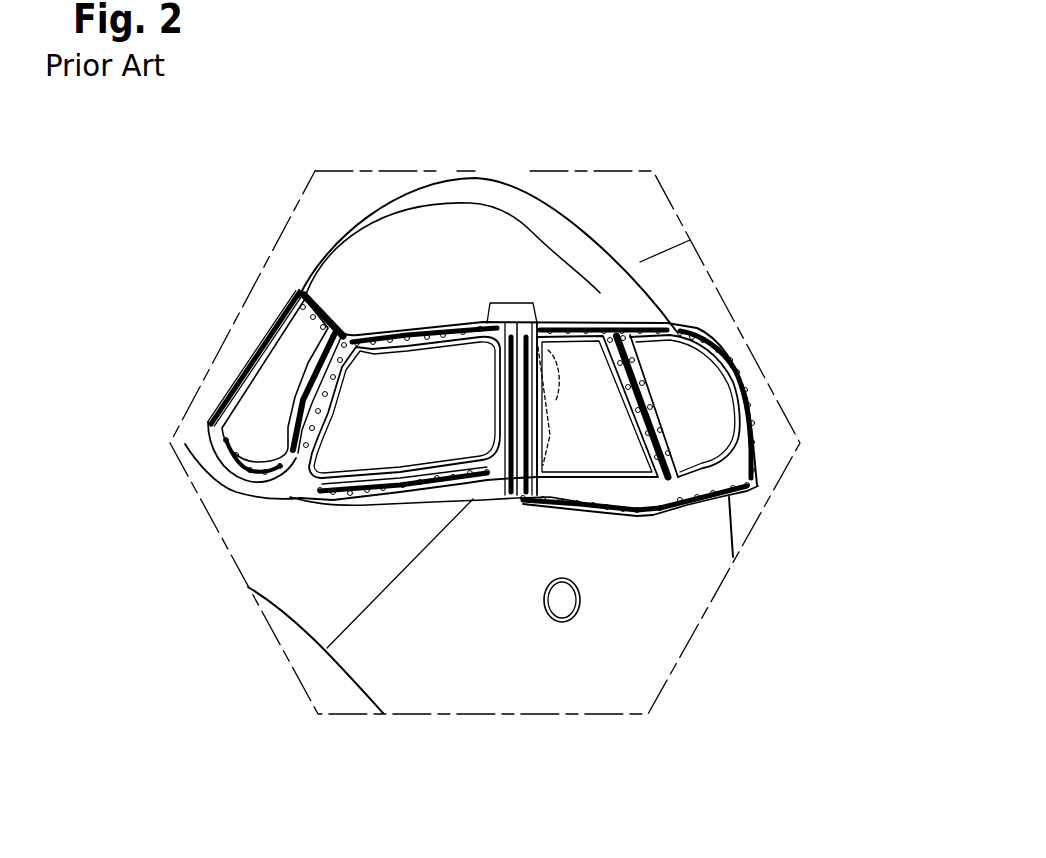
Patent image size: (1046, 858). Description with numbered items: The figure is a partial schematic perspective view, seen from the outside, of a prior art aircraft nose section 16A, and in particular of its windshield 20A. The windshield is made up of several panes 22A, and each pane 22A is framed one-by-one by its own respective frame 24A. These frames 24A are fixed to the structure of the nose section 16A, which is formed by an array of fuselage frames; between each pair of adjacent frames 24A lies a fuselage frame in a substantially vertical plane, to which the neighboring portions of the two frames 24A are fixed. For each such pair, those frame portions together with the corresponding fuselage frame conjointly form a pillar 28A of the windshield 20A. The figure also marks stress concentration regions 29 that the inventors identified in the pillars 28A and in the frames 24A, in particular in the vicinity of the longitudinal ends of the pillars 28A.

The nose section 16A is at (238, 558).
The windshield 20A is at (258, 346).
The panes 22A is at (665, 323).
The frames 24A is at (315, 490).
The pillar 28A is at (487, 390).
The stress concentration regions 29 is at (538, 347).